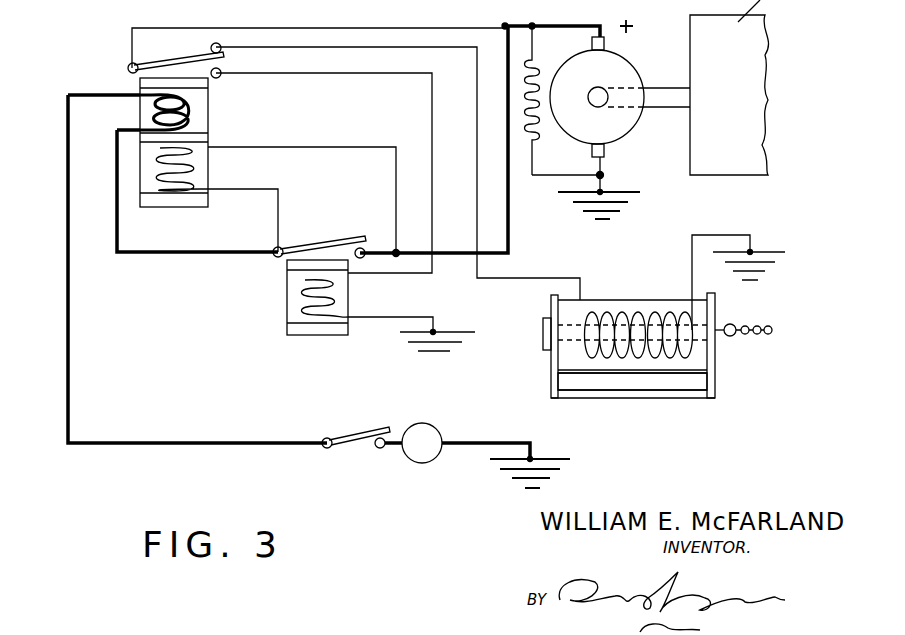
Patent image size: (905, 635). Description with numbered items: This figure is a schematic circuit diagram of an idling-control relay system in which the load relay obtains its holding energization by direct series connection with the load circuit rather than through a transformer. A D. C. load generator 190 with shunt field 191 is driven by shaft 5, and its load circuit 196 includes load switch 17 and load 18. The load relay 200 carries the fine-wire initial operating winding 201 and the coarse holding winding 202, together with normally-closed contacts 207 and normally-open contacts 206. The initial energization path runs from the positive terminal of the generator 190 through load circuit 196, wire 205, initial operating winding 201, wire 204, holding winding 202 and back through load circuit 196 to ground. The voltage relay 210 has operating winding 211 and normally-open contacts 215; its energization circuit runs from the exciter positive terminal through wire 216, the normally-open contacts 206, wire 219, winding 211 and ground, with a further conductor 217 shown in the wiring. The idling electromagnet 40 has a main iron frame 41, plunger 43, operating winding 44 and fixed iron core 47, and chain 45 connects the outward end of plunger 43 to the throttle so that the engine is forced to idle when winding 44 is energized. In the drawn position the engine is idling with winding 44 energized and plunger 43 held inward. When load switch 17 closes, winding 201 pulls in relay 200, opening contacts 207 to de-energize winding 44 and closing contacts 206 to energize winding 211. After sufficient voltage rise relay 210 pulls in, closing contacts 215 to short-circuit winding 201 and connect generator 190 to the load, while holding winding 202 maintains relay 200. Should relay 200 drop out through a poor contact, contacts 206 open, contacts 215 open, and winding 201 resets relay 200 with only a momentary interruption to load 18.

The shaft 5 is at (668, 97).
The load switch 17 is at (376, 427).
The load 18 is at (424, 423).
The idling electromagnet 40 is at (690, 404).
The main iron frame 41 is at (716, 391).
The plunger 43 is at (720, 340).
The operating winding 44 is at (657, 310).
The chain 45 is at (758, 335).
The fixed iron core 47 is at (545, 336).
The D. C. load generator 190 is at (630, 70).
The shunt field 191 is at (538, 62).
The load circuit 196 is at (72, 305).
The load relay 200 is at (248, 138).
The initial operating winding 201 is at (192, 171).
The holding winding 202 is at (190, 109).
The wire 204 is at (279, 211).
The wire 205 is at (338, 147).
The normally-open contacts 206 is at (222, 60).
The normally-closed contacts 207 is at (210, 50).
The voltage relay 210 is at (388, 305).
The operating winding 211 is at (302, 310).
The normally-open contacts 215 is at (364, 240).
The wire 216 is at (310, 28).
The conductor 217 is at (477, 68).
The wire 219 is at (426, 101).